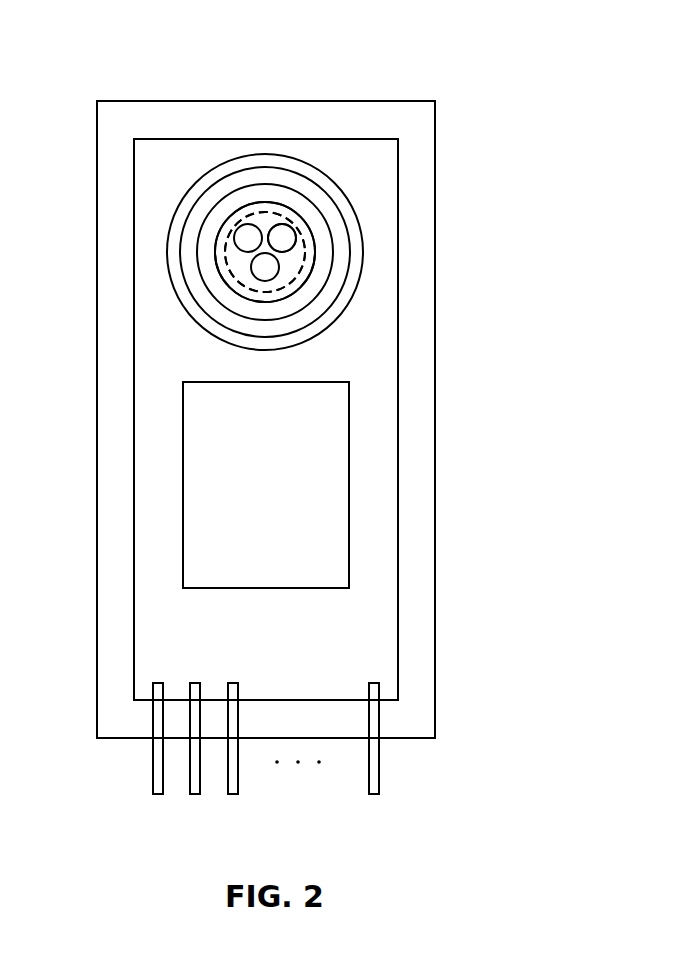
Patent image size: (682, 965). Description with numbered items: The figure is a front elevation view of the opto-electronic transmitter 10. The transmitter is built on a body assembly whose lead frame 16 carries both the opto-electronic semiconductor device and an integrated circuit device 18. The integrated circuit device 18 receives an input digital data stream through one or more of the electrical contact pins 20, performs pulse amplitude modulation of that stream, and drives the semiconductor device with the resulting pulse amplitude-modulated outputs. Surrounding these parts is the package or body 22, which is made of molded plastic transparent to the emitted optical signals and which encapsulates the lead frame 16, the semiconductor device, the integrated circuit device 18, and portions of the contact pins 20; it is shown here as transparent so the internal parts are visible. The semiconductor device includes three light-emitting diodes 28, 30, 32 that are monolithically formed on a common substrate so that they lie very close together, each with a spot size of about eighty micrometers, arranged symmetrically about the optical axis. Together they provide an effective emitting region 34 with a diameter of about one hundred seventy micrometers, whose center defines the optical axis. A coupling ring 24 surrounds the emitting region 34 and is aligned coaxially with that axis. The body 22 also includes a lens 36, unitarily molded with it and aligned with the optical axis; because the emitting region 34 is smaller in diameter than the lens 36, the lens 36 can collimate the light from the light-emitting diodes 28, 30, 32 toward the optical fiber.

The opto-electronic transmitter 10 is at (538, 53).
The lead frame 16 is at (134, 607).
The integrated circuit device 18 is at (183, 486).
The electrical contact pins 20 is at (152, 785).
The body 22 is at (435, 530).
The coupling ring 24 is at (295, 155).
The light-emitting diode 28 is at (248, 221).
The light-emitting diode 30 is at (222, 263).
The light-emitting diode 32 is at (294, 251).
The emitting region 34 is at (297, 275).
The lens 36 is at (303, 218).